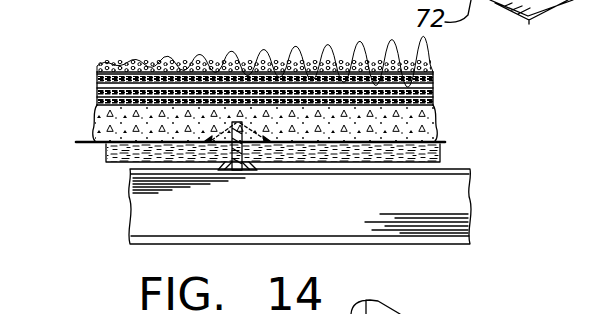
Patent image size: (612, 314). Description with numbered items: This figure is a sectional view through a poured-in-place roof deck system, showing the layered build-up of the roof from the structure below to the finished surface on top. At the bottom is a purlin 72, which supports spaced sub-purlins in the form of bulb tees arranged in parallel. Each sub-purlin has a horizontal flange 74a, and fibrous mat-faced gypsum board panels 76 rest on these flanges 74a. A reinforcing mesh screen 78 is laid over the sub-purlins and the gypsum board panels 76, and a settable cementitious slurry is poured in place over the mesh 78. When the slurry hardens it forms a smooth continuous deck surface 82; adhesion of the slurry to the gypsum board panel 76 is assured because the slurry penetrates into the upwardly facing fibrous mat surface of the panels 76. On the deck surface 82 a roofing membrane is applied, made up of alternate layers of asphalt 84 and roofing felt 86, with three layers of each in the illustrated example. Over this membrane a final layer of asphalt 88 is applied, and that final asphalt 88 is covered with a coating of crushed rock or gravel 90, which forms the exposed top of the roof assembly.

The purlin 72 is at (468, 208).
The horizontal flange 74a is at (237, 170).
The fibrous mat-faced gypsum board panel 76 is at (440, 153).
The reinforcing mesh screen 78 is at (440, 141).
The deck surface 82 is at (436, 118).
The asphalt layer 84 is at (432, 98).
The roofing felt layer 86 is at (93, 82).
The final asphalt layer 88 is at (294, 70).
The crushed rock or gravel coating 90 is at (196, 63).